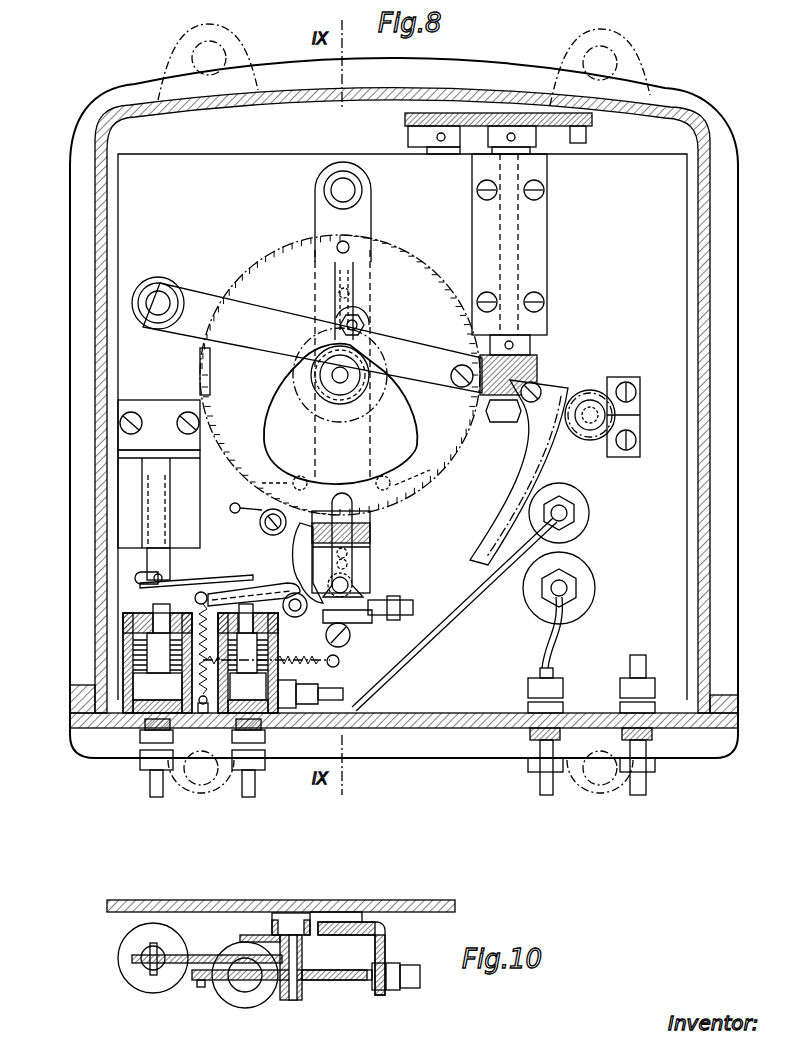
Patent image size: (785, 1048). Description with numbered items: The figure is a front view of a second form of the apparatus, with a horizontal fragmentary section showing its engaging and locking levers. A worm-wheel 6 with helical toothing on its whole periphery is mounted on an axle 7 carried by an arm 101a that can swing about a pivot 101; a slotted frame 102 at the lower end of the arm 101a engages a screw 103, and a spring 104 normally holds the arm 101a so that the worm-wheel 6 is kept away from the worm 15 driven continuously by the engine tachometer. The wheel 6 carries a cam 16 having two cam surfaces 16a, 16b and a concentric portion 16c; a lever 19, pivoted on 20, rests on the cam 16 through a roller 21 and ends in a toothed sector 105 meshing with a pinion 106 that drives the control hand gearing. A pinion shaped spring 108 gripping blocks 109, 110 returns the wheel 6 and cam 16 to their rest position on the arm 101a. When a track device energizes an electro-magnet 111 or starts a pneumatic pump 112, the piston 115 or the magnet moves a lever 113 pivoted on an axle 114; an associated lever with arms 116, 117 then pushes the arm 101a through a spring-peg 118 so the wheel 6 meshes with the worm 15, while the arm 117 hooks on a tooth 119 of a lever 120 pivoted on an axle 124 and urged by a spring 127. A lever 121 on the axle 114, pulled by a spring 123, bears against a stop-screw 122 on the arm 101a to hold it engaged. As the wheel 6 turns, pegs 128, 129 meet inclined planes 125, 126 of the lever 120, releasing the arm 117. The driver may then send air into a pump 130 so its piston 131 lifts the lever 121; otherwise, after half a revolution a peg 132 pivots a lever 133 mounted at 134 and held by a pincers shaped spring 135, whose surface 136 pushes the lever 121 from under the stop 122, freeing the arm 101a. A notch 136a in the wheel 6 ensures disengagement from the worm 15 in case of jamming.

In FIG. 8, the worm-wheel 6 is at (268, 280).
In FIG. 8, the axle 7 is at (352, 372).
In FIG. 8, the worm 15 is at (538, 366).
In FIG. 8, the cam 16 is at (285, 428).
In FIG. 8, the cam surface 16a is at (268, 402).
In FIG. 8, the cam surface 16b is at (482, 398).
In FIG. 8, the concentric portion 16c is at (440, 473).
In FIG. 8, the lever 19 is at (182, 322).
In FIG. 8, the pivot 20 is at (150, 300).
In FIG. 8, the roller 21 is at (366, 327).
In FIG. 8, the pivot 101 is at (362, 186).
In FIG. 8, the arm 101a is at (374, 222).
In FIG. 10, the arm 101a is at (345, 920).
In FIG. 8, the slotted frame 102 is at (395, 712).
In FIG. 8, the screw 103 is at (358, 700).
In FIG. 8, the spring 104 is at (293, 700).
In FIG. 8, the toothed sector shaped segment 105 is at (556, 462).
In FIG. 8, the pinion 106 is at (596, 392).
In FIG. 8, the pinion shaped spring 108 is at (362, 252).
In FIG. 8, the block 109 is at (352, 300).
In FIG. 8, the block 110 is at (356, 290).
In FIG. 8, the electro-magnet 111 is at (125, 500).
In FIG. 8, the pneumatic pump 112 is at (130, 665).
In FIG. 10, the pneumatic pump 112 is at (163, 982).
In FIG. 8, the lever 113 is at (136, 580).
In FIG. 10, the lever 113 is at (135, 965).
In FIG. 8, the axle 114 is at (262, 606).
In FIG. 10, the axle 114 is at (292, 1000).
In FIG. 8, the piston 115 is at (150, 690).
In FIG. 8, the arm 116 is at (360, 575).
In FIG. 10, the arm 116 is at (272, 935).
In FIG. 8, the arm 117 is at (194, 597).
In FIG. 10, the arm 117 is at (245, 935).
In FIG. 8, the spring-peg 118 is at (296, 560).
In FIG. 8, the tooth 119 is at (222, 597).
In FIG. 8, the lever 120 is at (223, 587).
In FIG. 8, the lever 121 is at (338, 664).
In FIG. 10, the lever 121 is at (342, 982).
In FIG. 8, the stop-screw 122 is at (398, 620).
In FIG. 10, the stop-screw 122 is at (385, 992).
In FIG. 8, the spring 123 is at (95, 716).
In FIG. 8, the axle 124 is at (266, 528).
In FIG. 8, the inclined plane 125 is at (300, 476).
In FIG. 8, the inclined plane 126 is at (385, 476).
In FIG. 8, the spring 127 is at (236, 513).
In FIG. 8, the peg 128 is at (249, 492).
In FIG. 8, the peg 129 is at (420, 486).
In FIG. 8, the pump 130 is at (225, 732).
In FIG. 10, the pump 130 is at (247, 992).
In FIG. 8, the piston 131 is at (282, 732).
In FIG. 8, the peg 132 is at (336, 244).
In FIG. 8, the lever 133 is at (370, 505).
In FIG. 8, the pivot 134 is at (372, 590).
In FIG. 8, the pincers shaped spring 135 is at (372, 545).
In FIG. 8, the cam or bearing surface 136 is at (350, 638).
In FIG. 8, the notch 136a is at (205, 378).